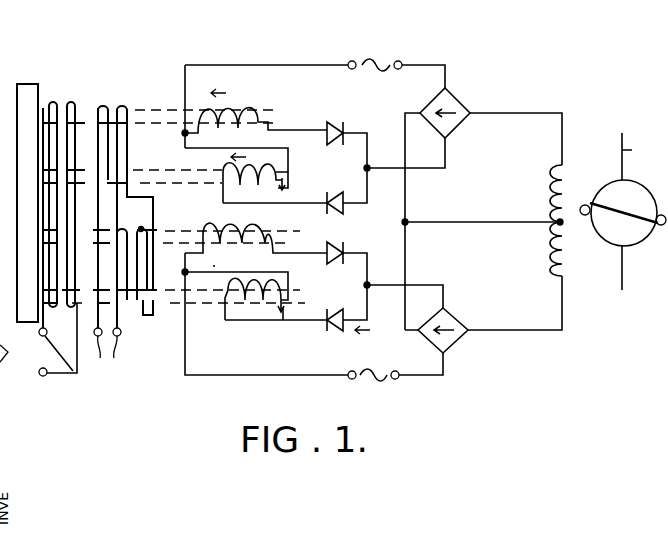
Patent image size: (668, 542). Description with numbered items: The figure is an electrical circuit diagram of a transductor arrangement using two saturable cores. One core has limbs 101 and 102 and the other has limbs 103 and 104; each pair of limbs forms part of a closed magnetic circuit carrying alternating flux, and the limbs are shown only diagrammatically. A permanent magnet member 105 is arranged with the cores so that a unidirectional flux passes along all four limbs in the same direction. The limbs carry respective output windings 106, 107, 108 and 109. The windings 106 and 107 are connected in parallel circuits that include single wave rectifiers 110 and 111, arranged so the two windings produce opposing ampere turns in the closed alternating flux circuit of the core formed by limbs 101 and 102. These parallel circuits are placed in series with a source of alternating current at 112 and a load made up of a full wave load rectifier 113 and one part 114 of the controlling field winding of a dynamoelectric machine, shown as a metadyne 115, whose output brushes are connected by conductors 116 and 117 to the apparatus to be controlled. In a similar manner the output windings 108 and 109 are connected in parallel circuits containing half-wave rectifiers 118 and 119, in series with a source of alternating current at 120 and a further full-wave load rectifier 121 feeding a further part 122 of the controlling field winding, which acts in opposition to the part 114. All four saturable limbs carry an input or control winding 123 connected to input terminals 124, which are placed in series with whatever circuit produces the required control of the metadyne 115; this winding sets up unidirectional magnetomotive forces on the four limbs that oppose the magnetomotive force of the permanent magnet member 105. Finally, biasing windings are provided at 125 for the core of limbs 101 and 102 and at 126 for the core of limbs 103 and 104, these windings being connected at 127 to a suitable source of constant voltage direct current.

The limb 101 is at (160, 120).
The limb 102 is at (290, 182).
The limb 103 is at (283, 236).
The limb 104 is at (205, 297).
The permanent magnet member 105 is at (27, 86).
The output winding 106 is at (240, 105).
The output winding 107 is at (272, 175).
The output winding 108 is at (245, 263).
The output winding 109 is at (282, 314).
The rectifier 110 is at (339, 127).
The rectifier 111 is at (343, 198).
The source of alternating current 112 is at (398, 61).
The load rectifier 113 is at (483, 161).
The part of controlling field winding 114 is at (550, 188).
The metadyne 115 is at (656, 281).
The conductor 116 is at (645, 156).
The conductor 117 is at (622, 283).
The rectifier 118 is at (323, 265).
The rectifier 119 is at (341, 326).
The source of alternating current 120 is at (399, 386).
The load rectifier 121 is at (489, 360).
The part of controlling field winding 122 is at (550, 246).
The input or control winding 123 is at (56, 104).
The input terminals 124 is at (49, 376).
The biasing winding 125 is at (121, 106).
The biasing winding 126 is at (131, 307).
The connection to constant voltage direct current source 127 is at (105, 351).